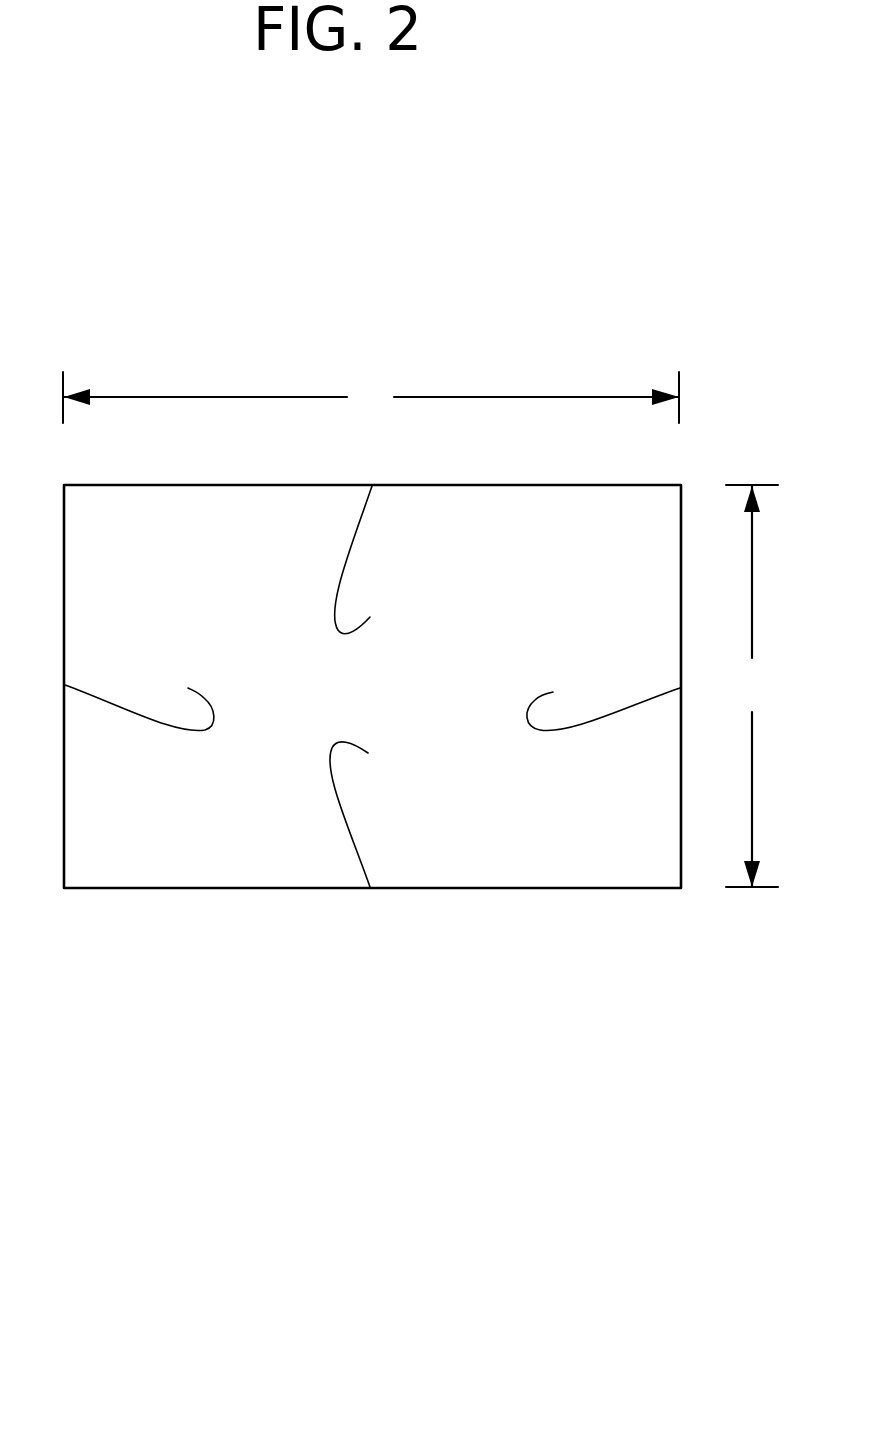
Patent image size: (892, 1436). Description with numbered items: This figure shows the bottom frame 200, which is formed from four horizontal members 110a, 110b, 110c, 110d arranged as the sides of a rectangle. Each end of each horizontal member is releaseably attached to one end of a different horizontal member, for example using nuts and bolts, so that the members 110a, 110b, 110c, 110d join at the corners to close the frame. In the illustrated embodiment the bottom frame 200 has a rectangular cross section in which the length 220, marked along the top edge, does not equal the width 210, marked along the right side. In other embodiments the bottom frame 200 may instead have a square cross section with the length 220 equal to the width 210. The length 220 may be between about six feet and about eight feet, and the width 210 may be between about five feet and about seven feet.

The bottom frame 200 is at (387, 1140).
The horizontal member 110a is at (603, 696).
The horizontal member 110b is at (368, 560).
The horizontal member 110c is at (139, 697).
The horizontal member 110d is at (370, 814).
The length 220 is at (371, 397).
The width 210 is at (752, 686).